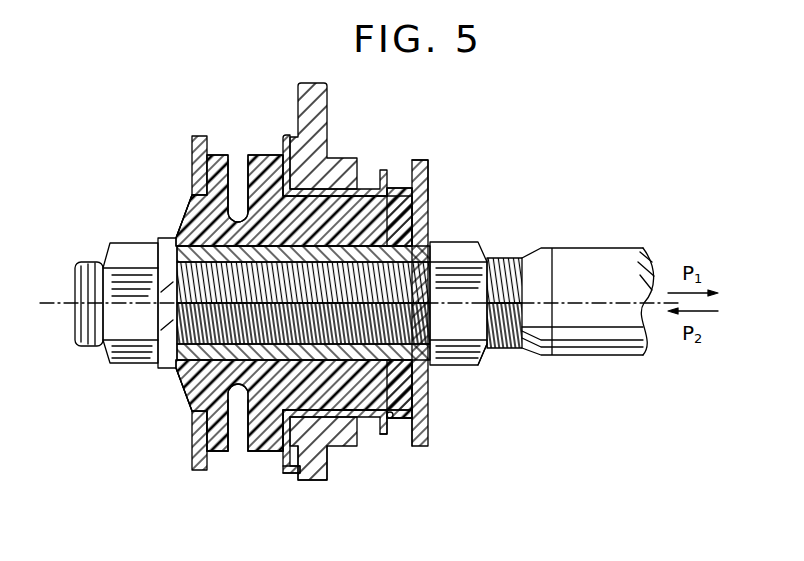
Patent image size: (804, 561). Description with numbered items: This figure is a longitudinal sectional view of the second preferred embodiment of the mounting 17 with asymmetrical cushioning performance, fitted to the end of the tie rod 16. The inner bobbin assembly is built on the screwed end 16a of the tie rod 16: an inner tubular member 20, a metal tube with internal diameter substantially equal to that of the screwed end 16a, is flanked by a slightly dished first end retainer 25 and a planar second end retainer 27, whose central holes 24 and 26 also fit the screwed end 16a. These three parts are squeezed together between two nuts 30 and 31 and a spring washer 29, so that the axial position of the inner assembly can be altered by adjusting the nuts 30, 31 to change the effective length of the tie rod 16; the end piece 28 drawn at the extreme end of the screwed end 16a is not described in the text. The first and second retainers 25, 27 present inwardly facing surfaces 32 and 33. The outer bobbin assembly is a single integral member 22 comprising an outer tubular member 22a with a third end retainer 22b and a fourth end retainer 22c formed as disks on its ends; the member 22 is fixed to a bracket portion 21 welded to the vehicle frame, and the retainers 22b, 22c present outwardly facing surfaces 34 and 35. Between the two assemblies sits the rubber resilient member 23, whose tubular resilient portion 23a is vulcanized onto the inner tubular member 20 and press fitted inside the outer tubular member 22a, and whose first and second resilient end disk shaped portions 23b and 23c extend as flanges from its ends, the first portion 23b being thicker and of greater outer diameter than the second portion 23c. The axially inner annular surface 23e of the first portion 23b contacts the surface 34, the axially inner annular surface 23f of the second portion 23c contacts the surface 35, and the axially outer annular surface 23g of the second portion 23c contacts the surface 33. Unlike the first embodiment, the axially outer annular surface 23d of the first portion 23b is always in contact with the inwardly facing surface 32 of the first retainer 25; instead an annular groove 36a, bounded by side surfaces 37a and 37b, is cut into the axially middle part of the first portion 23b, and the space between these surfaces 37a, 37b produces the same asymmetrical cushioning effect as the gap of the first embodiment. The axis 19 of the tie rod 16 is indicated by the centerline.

The tie rod 16 is at (600, 240).
The screwed end 16a is at (513, 262).
The mounting 17 is at (413, 160).
The axis 19 is at (57, 303).
The inner tubular member 20 is at (372, 236).
The bracket portion 21 is at (296, 93).
The single integral member 22 is at (336, 187).
The outer tubular member 22a is at (340, 412).
The third end retainer 22b is at (290, 465).
The fourth end retainer 22c is at (380, 420).
The resilient member 23 is at (272, 215).
The tubular resilient portion 23a is at (388, 416).
The first resilient end disk shaped portion 23b is at (255, 427).
The second resilient end disk shaped portion 23c is at (414, 430).
The axially outer annular surface 23d is at (210, 419).
The axially inner annular surface 23e is at (303, 458).
The axially inner annular surface 23f is at (390, 440).
The axially outer annular surface 23g is at (338, 388).
The hole 24 is at (171, 373).
The first end retainer 25 is at (183, 213).
The hole 26 is at (433, 341).
The second end retainer 27 is at (428, 182).
The cap nut 28 is at (77, 327).
The spring washer 29 is at (162, 237).
The nut 30 is at (108, 350).
The nut 31 is at (478, 353).
The inwardly facing surface 32 is at (210, 433).
The inwardly facing surface 33 is at (394, 420).
The outwardly facing surface 34 is at (277, 440).
The outwardly facing surface 35 is at (389, 436).
The annular groove 36a is at (233, 440).
The side surface 37a is at (234, 188).
The side surface 37b is at (243, 190).